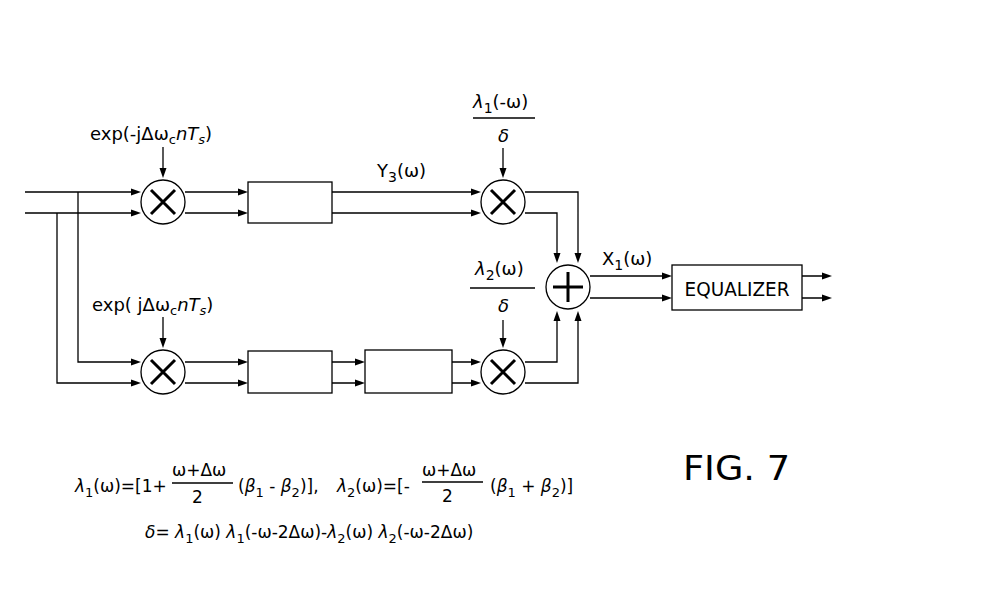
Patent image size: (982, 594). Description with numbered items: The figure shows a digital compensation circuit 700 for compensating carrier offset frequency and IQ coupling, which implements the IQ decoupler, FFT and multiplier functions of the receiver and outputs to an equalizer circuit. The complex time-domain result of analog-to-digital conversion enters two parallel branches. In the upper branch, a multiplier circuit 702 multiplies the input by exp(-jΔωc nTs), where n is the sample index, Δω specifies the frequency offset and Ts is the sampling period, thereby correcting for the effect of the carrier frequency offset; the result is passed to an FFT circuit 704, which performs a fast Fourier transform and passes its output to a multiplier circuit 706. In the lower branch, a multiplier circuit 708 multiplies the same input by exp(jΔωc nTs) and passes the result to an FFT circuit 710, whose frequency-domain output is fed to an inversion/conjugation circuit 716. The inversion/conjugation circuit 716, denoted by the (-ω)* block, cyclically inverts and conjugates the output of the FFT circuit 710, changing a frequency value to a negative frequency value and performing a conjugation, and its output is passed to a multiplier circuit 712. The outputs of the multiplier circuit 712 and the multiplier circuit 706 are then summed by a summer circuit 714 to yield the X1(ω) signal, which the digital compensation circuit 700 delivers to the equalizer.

The digital compensation circuit 700 is at (176, 89).
The multiplier circuit 702 is at (148, 218).
The FFT circuit 704 is at (292, 180).
The multiplier circuit 706 is at (519, 186).
The multiplier circuit 708 is at (148, 388).
The FFT circuit 710 is at (288, 395).
The multiplier circuit 712 is at (519, 388).
The summer circuit 714 is at (584, 303).
The inversion/conjugation circuit 716 is at (406, 395).